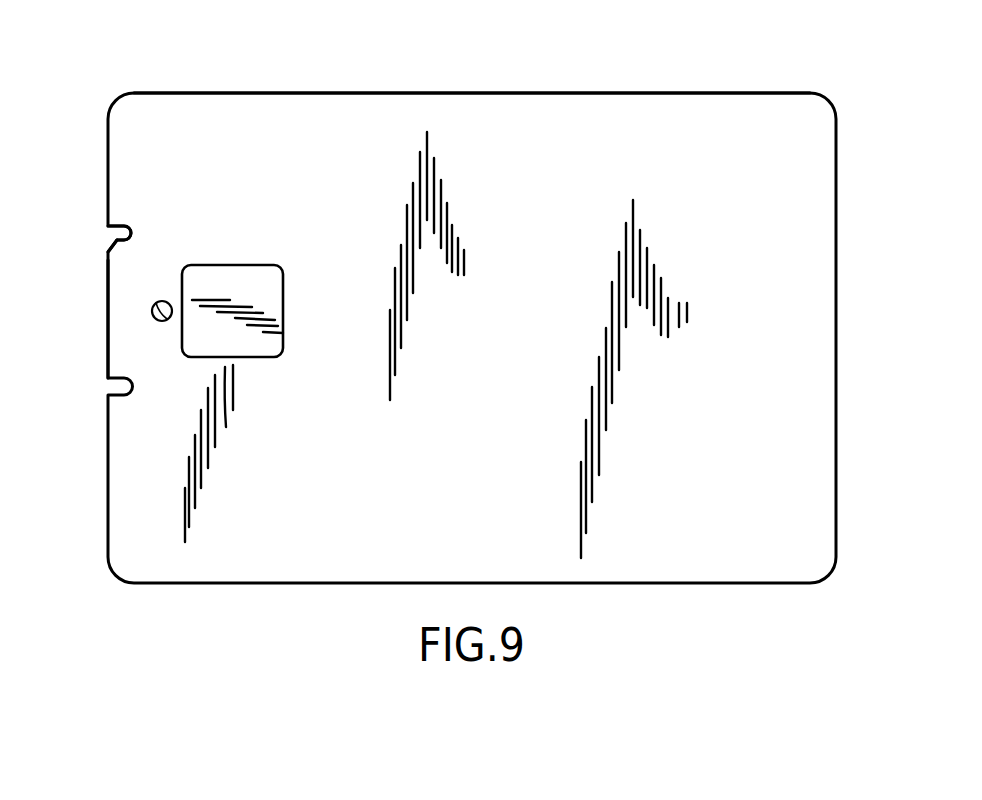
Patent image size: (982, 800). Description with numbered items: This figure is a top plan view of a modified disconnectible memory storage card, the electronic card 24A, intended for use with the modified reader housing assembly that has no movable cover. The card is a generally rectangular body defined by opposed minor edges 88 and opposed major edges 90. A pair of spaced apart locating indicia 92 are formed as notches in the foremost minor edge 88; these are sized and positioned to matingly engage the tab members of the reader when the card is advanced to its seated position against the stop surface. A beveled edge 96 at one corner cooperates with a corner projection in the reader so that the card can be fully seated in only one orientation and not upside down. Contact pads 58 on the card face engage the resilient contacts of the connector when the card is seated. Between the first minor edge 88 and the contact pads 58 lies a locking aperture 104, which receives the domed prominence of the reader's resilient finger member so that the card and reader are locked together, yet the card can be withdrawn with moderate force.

The electronic card 24A is at (696, 88).
The major edge 90 is at (480, 93).
The minor edge 88 is at (107, 456).
The locating indicia 92 is at (134, 234).
The beveled edge 96 is at (112, 245).
The contact pads 58 is at (256, 288).
The locking aperture 104 is at (152, 310).